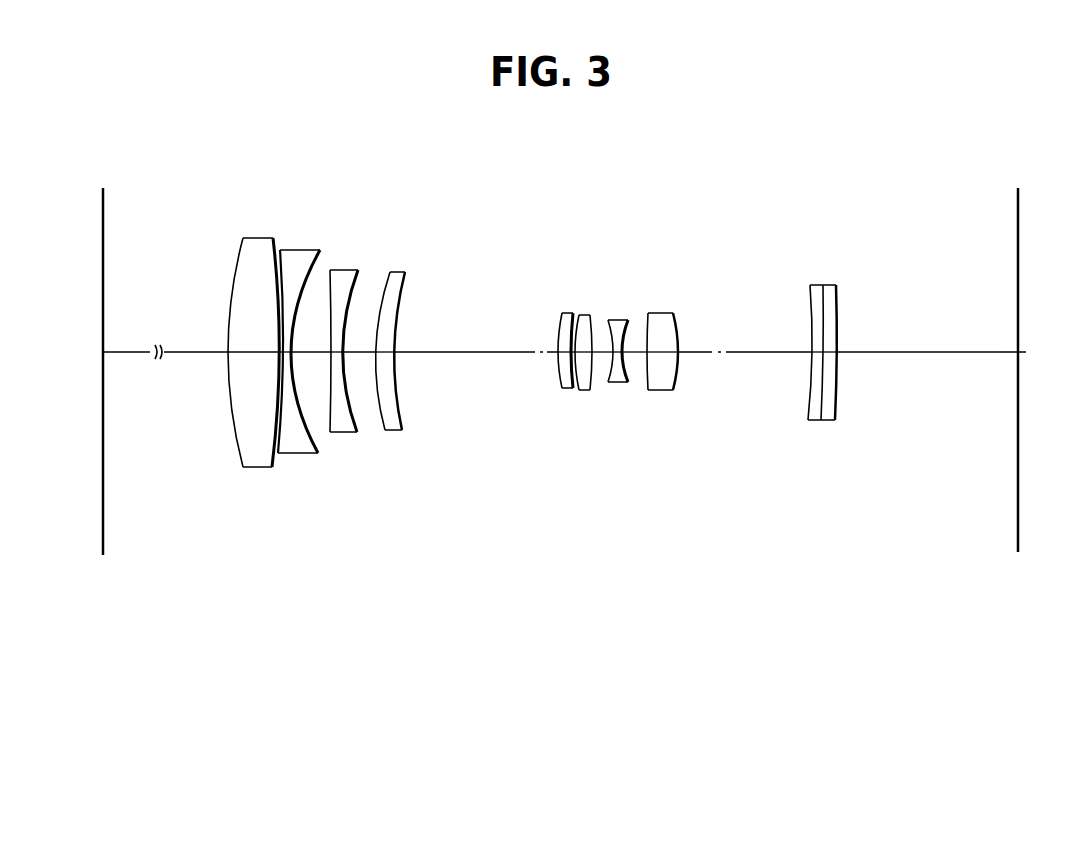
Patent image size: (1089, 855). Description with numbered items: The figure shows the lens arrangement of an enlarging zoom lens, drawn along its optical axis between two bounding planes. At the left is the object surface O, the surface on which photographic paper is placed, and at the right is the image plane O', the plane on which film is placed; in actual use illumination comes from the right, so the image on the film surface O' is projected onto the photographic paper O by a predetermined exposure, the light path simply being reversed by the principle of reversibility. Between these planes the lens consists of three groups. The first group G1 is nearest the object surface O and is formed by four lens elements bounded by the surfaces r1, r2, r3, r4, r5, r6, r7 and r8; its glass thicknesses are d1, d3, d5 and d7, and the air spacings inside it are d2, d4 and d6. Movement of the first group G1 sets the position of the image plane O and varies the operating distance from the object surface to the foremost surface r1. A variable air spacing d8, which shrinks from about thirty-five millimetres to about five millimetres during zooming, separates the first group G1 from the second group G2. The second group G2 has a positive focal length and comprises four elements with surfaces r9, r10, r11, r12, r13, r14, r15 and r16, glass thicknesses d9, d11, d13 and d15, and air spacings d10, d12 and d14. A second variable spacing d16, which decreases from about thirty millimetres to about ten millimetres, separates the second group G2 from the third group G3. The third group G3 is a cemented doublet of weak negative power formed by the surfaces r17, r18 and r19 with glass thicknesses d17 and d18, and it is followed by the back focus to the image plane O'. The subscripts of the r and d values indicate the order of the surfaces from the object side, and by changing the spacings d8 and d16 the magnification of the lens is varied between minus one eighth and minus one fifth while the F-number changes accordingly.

The object surface O is at (129, 371).
The image plane O' is at (1048, 370).
The first group G1 is at (418, 223).
The second group G2 is at (692, 272).
The third group G3 is at (785, 270).
The first lens surface r1 is at (243, 467).
The second lens surface r2 is at (272, 467).
The third lens surface r3 is at (278, 453).
The fourth lens surface r4 is at (318, 453).
The fifth lens surface r5 is at (330, 432).
The sixth lens surface r6 is at (357, 432).
The seventh lens surface r7 is at (385, 430).
The eighth lens surface r8 is at (402, 430).
The ninth lens surface r9 is at (562, 388).
The tenth lens surface r10 is at (573, 388).
The eleventh lens surface r11 is at (579, 390).
The twelfth lens surface r12 is at (590, 390).
The thirteenth lens surface r13 is at (608, 382).
The fourteenth lens surface r14 is at (628, 382).
The fifteenth lens surface r15 is at (648, 390).
The sixteenth lens surface r16 is at (673, 390).
The seventeenth lens surface r17 is at (808, 420).
The eighteenth lens surface r18 is at (821, 420).
The nineteenth lens surface r19 is at (835, 420).
The first lens thickness d1 is at (253, 339).
The second lens spacing d2 is at (279, 356).
The third lens thickness d3 is at (280, 334).
The fourth lens spacing d4 is at (311, 339).
The fifth lens thickness d5 is at (335, 352).
The sixth lens spacing d6 is at (360, 339).
The seventh lens thickness d7 is at (388, 350).
The variable spacing between first and second groups d8 is at (476, 339).
The ninth lens thickness d9 is at (562, 348).
The tenth lens spacing d10 is at (572, 330).
The eleventh lens thickness d11 is at (587, 340).
The twelfth lens spacing d12 is at (600, 339).
The thirteenth lens thickness d13 is at (618, 324).
The fourteenth lens spacing d14 is at (635, 339).
The fifteenth lens thickness d15 is at (663, 339).
The variable spacing between second and third groups d16 is at (745, 339).
The seventeenth lens thickness d17 is at (813, 348).
The eighteenth lens thickness d18 is at (832, 348).